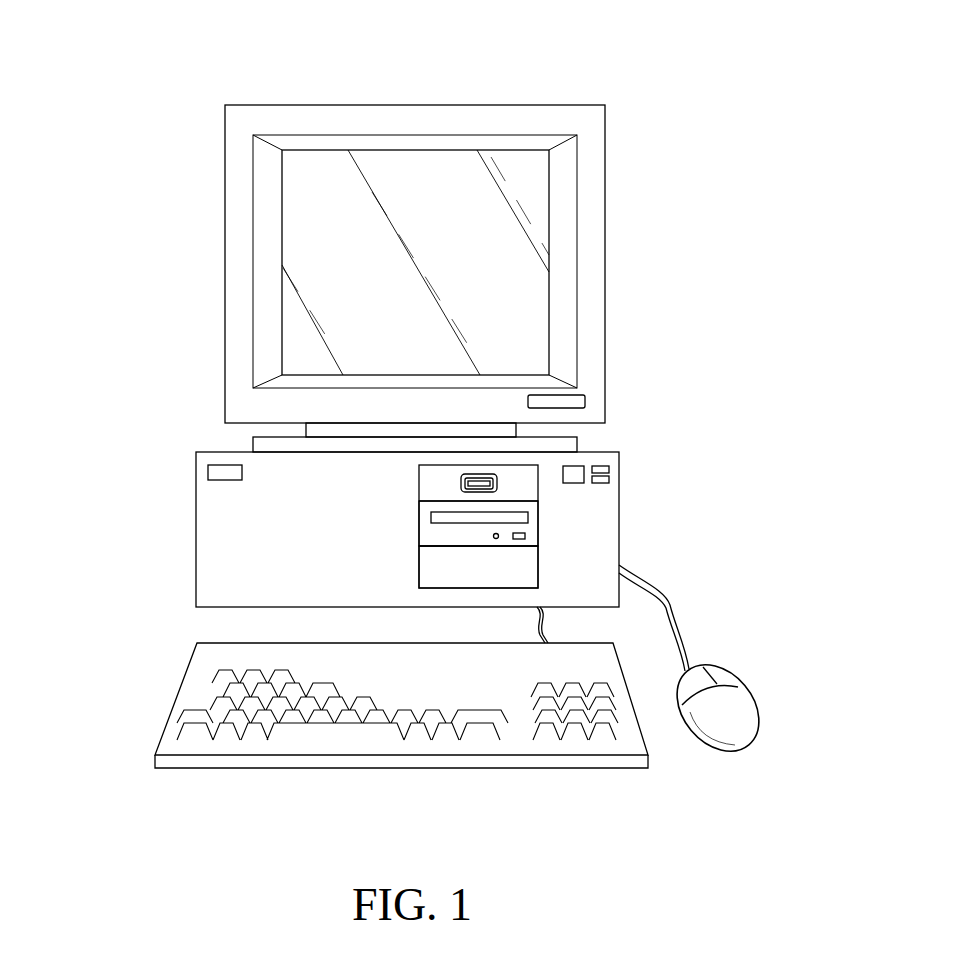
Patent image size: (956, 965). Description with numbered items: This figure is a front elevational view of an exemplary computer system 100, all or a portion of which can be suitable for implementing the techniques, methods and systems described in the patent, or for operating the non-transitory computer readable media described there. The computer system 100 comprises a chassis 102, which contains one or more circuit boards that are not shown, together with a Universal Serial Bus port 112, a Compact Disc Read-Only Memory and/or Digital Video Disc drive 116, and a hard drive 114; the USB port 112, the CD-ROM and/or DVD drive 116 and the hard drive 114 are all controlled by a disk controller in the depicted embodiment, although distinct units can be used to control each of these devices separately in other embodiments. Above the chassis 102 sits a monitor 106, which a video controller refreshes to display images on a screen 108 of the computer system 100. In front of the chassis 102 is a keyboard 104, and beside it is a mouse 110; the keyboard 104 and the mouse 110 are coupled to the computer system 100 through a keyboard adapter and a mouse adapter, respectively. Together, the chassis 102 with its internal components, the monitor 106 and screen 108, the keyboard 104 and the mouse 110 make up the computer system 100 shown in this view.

The computer system 100 is at (601, 75).
The chassis 102 is at (196, 530).
The keyboard 104 is at (177, 700).
The monitor 106 is at (300, 105).
The screen 108 is at (330, 267).
The mouse 110 is at (738, 698).
The Universal Serial Bus (USB) port 112 is at (497, 478).
The hard drive 114 is at (528, 567).
The CD-ROM and/or DVD drive 116 is at (528, 523).